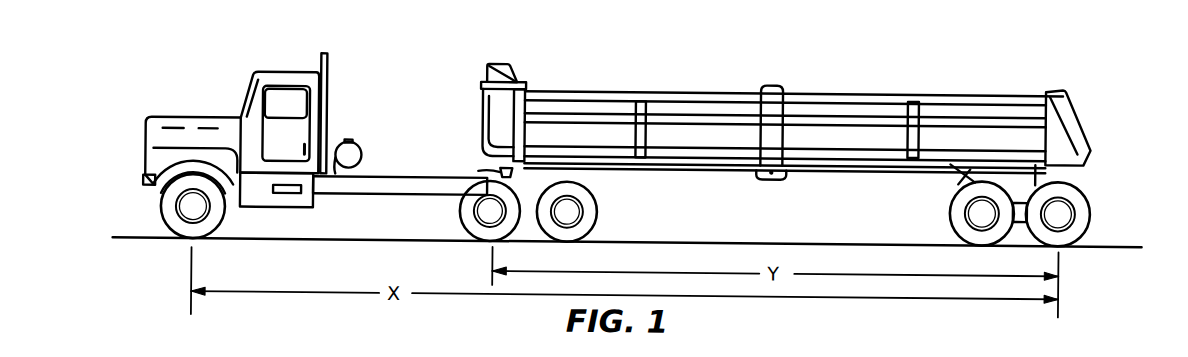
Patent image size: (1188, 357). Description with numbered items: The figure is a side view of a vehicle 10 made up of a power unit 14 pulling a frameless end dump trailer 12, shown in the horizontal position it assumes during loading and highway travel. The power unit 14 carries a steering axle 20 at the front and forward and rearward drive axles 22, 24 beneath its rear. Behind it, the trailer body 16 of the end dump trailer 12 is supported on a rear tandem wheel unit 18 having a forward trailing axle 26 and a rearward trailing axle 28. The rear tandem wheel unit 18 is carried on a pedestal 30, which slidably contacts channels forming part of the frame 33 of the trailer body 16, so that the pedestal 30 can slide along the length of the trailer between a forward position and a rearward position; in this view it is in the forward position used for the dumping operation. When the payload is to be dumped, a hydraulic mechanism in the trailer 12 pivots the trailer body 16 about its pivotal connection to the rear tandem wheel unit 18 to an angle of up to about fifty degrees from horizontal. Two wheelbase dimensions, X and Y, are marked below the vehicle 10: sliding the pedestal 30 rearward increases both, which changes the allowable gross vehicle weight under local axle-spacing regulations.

The vehicle 10 is at (412, 91).
The end dump trailer 12 is at (784, 113).
The power unit 14 is at (195, 117).
The trailer body 16 is at (656, 92).
The rear tandem wheel unit 18 is at (1084, 191).
The steering axle 20 is at (176, 216).
The forward drive axle 22 is at (486, 213).
The rearward drive axle 24 is at (572, 213).
The forward trailing axle 26 is at (975, 212).
The rearward trailing axle 28 is at (1065, 212).
The pedestal 30 is at (965, 172).
The frame 33 is at (905, 133).